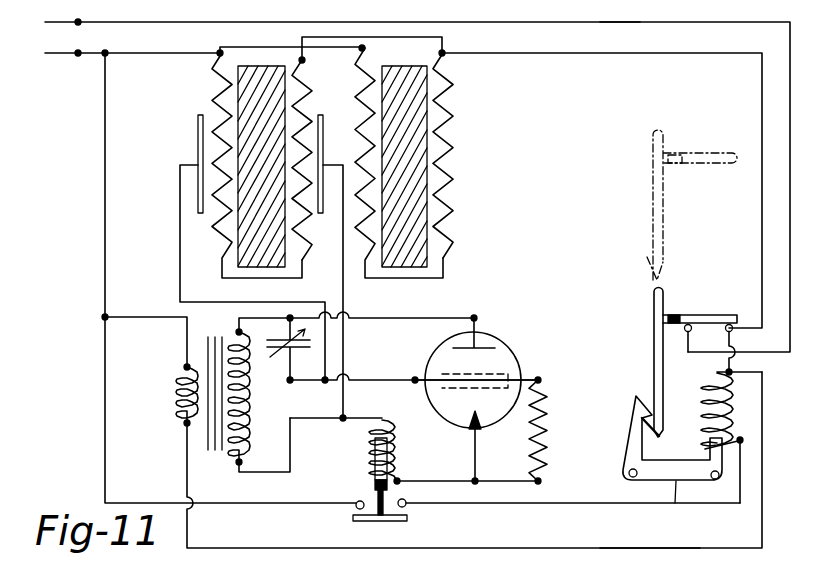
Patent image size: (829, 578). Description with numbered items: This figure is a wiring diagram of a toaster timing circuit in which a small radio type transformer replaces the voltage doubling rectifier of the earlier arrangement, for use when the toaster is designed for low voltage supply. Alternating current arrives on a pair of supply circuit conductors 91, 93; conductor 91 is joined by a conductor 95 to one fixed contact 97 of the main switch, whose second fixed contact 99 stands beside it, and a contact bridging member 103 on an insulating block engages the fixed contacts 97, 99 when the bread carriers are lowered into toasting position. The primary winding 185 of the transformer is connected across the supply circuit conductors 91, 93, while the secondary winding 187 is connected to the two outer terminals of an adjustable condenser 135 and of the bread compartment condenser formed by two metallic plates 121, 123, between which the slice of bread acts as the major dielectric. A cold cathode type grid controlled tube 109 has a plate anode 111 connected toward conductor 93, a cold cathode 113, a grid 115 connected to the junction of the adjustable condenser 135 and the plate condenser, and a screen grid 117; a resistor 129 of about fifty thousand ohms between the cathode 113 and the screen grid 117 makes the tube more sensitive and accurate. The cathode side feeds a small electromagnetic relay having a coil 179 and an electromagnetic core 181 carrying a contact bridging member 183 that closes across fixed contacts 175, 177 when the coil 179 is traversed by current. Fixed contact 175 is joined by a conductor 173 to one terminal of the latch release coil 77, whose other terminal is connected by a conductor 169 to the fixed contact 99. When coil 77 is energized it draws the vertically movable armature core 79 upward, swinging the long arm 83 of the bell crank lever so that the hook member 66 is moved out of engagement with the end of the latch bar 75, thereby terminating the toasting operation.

The supply circuit conductor 91 is at (60, 22).
The supply circuit conductor 93 is at (53, 55).
The conductor 95 is at (615, 23).
The metallic plate 121 is at (198, 137).
The metallic plate 123 is at (323, 124).
The adjustable condenser 135 is at (270, 352).
The secondary winding 187 is at (245, 408).
The primary winding 185 is at (177, 398).
The coil 179 is at (370, 442).
The electromagnetic core 181 is at (375, 484).
The fixed contact 177 is at (355, 508).
The fixed contact 175 is at (406, 507).
The contact bridging member 183 is at (386, 521).
The plate anode 111 is at (487, 342).
The grid controlled tube 109 is at (514, 352).
The grid 115 is at (433, 377).
The screen grid 117 is at (508, 375).
The cold cathode 113 is at (476, 427).
The resistor 129 is at (547, 441).
The contact bridging member 103 is at (688, 313).
The fixed contact 97 is at (685, 333).
The fixed contact 99 is at (733, 329).
The latch bar 75 is at (636, 396).
The hook member 66 is at (660, 432).
The coil 77 is at (733, 415).
The armature core 79 is at (722, 457).
The long arm 83 is at (664, 506).
The conductor 173 is at (598, 503).
The conductor 169 is at (671, 548).